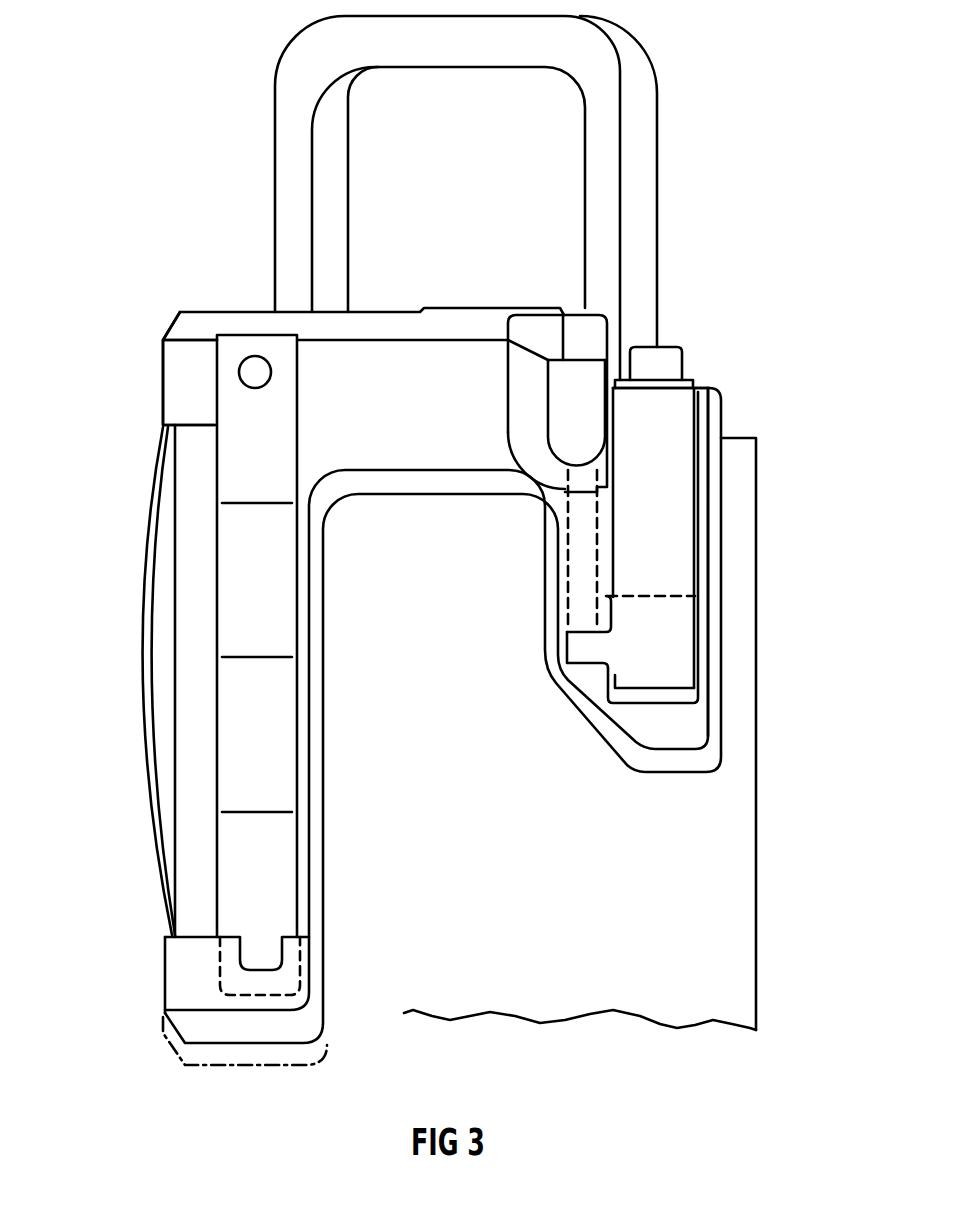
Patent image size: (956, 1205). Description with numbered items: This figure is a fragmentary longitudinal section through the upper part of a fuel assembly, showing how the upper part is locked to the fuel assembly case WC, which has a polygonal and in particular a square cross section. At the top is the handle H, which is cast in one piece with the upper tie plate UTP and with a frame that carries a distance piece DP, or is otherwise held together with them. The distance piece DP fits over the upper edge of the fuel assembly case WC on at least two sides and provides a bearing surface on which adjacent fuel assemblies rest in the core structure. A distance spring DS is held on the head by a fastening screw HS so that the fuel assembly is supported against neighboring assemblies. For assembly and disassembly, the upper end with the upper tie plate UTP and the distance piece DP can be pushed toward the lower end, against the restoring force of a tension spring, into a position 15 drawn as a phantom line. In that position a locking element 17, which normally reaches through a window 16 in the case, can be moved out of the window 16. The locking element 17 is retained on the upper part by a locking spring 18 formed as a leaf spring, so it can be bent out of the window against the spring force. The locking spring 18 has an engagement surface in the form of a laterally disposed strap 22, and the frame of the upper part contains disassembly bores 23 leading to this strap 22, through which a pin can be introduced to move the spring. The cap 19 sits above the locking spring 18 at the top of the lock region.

The handle H is at (643, 197).
The distance piece DP is at (195, 322).
The fastening screw HS is at (255, 356).
The distance spring DS is at (147, 560).
The upper tie plate UTP is at (187, 710).
The position 15 is at (245, 1068).
The window 16 is at (684, 695).
The locking element 17 is at (680, 633).
The locking spring 18 is at (680, 517).
The cap 19 is at (672, 360).
The strap 22 is at (575, 648).
The disassembly bores 23 is at (575, 543).
The fuel assembly case WC is at (737, 888).